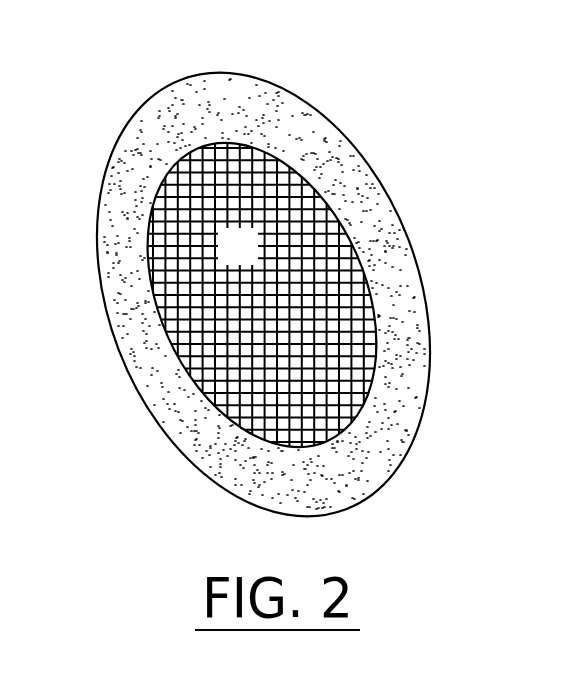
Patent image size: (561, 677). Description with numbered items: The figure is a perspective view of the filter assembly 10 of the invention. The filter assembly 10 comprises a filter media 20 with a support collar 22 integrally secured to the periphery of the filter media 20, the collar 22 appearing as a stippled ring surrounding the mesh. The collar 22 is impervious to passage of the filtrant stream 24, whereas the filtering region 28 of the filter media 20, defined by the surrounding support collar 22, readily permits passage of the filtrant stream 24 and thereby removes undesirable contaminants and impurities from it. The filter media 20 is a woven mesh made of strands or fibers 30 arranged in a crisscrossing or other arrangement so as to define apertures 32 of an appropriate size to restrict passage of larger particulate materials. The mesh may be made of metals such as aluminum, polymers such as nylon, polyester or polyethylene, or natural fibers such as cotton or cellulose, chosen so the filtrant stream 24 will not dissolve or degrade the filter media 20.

The filter assembly 10 is at (266, 290).
The filter media 20 is at (233, 296).
The support collar 22 is at (263, 294).
The filtrant stream 24 is at (420, 257).
The filtering region 28 is at (253, 261).
The strands or fibers 30 is at (264, 295).
The apertures 32 is at (168, 237).